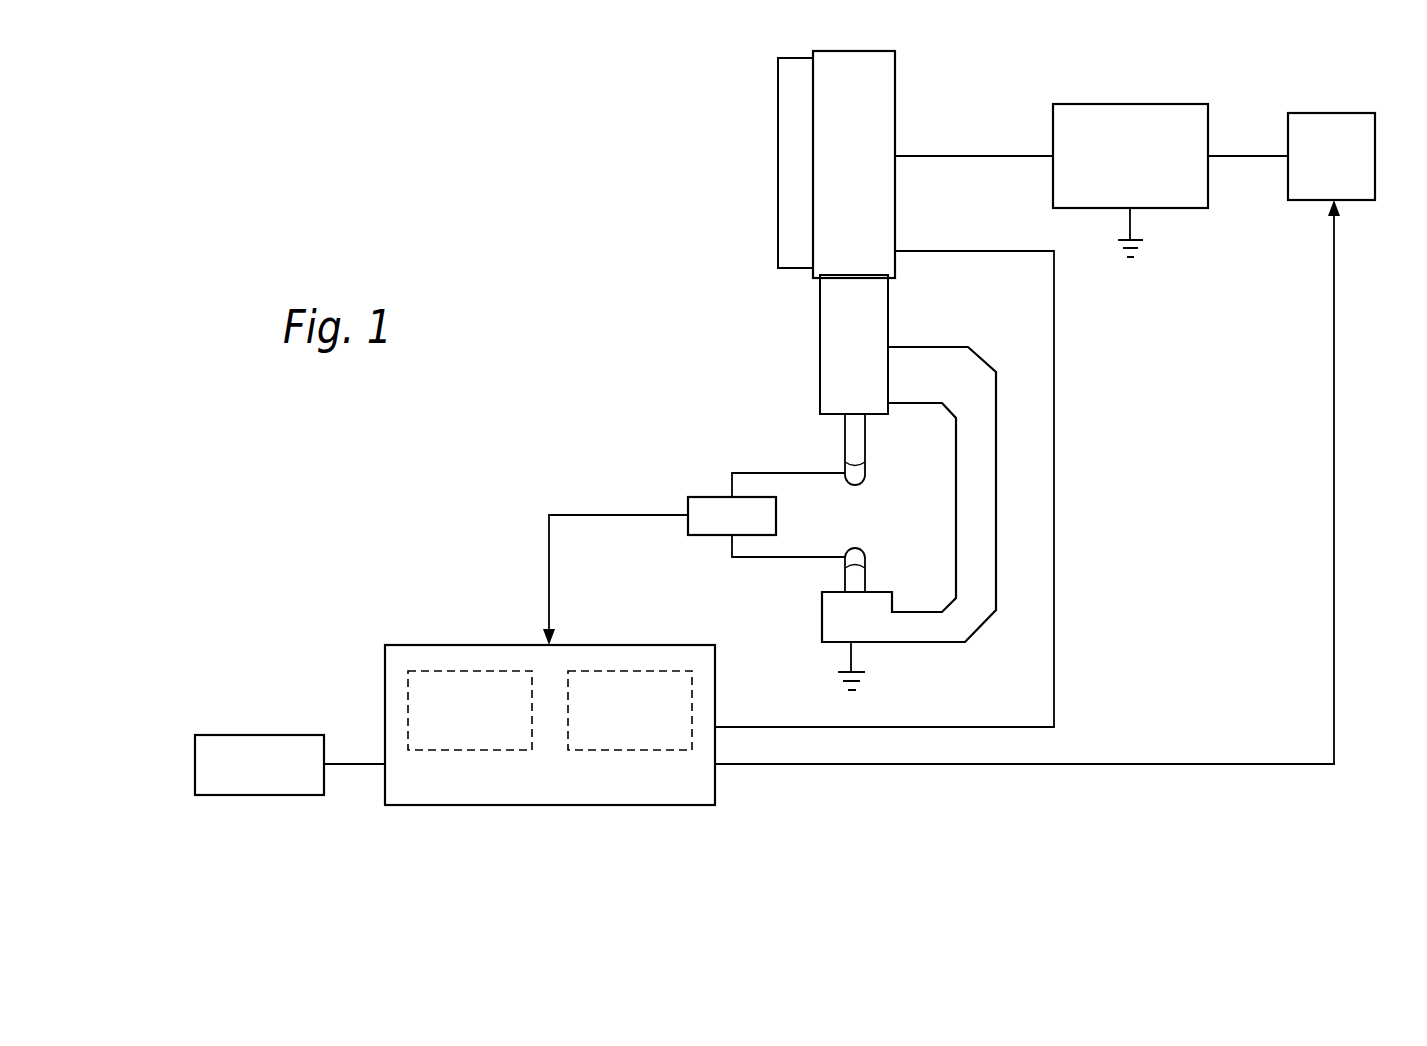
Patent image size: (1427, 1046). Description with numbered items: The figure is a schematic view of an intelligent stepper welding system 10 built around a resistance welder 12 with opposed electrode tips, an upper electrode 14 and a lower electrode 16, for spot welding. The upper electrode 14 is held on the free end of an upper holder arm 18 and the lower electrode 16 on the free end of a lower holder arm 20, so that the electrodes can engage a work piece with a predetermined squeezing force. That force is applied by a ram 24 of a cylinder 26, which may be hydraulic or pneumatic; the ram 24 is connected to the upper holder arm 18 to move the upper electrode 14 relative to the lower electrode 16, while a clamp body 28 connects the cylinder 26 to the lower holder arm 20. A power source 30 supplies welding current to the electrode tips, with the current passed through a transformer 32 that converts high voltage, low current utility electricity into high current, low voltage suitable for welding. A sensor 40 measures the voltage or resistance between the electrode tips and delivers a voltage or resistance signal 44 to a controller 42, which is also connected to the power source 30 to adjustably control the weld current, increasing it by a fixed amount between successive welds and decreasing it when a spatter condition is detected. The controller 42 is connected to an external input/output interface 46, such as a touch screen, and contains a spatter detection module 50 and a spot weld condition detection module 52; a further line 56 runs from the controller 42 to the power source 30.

The intelligent stepper welding system 10 is at (568, 217).
The resistance welder 12 is at (726, 373).
The upper electrode 14 is at (865, 473).
The lower electrode 16 is at (865, 560).
The upper holder arm 18 is at (852, 440).
The lower holder arm 20 is at (855, 575).
The ram 24 is at (843, 337).
The cylinder 26 is at (877, 122).
The clamp body 28 is at (923, 632).
The power source 30 is at (1327, 113).
The transformer 32 is at (1138, 104).
The sensor 40 is at (701, 535).
The controller 42 is at (452, 645).
The voltage or resistance signal 44 is at (612, 510).
The external input/output interface 46 is at (252, 735).
The spatter detection module 50 is at (470, 750).
The spot weld condition detection module 52 is at (630, 750).
The power control line 56 is at (1334, 577).